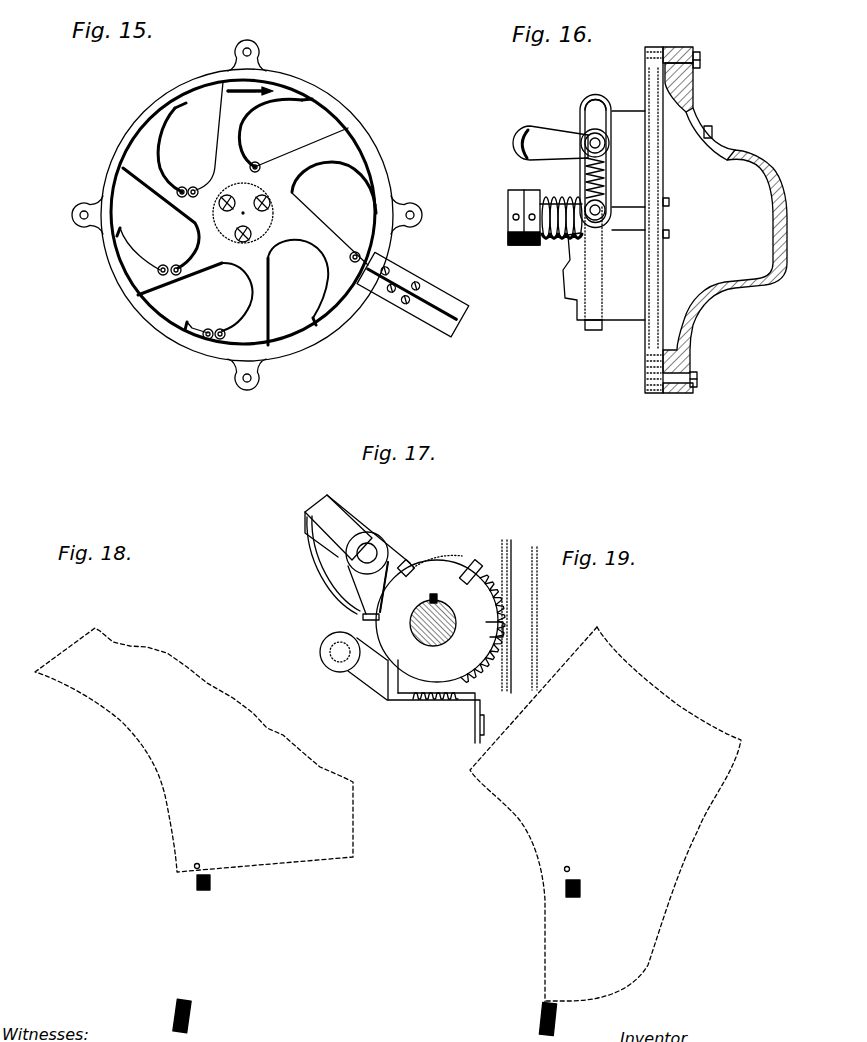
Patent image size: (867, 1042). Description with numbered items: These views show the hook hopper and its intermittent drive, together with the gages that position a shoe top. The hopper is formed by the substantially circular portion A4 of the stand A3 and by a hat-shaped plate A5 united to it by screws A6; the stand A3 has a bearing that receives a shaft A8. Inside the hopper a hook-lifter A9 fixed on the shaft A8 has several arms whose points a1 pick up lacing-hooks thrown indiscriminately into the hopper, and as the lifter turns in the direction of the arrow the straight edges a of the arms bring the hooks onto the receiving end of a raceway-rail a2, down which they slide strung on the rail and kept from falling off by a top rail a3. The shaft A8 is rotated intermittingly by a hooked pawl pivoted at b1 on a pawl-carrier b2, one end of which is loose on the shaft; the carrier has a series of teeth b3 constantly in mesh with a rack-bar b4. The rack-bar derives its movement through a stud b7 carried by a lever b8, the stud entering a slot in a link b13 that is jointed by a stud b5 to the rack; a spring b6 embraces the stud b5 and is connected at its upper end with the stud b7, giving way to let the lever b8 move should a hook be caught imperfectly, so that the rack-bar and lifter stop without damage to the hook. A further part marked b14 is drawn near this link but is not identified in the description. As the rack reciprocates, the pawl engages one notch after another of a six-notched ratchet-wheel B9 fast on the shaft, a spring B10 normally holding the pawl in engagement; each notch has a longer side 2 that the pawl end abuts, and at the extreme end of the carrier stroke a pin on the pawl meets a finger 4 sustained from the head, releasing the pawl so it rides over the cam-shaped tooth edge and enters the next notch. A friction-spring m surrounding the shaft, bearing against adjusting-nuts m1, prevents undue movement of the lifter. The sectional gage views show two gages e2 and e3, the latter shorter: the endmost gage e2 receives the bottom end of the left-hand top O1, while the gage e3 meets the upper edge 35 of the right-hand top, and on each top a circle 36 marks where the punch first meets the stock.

In FIG. 15, the hook-lifter A9 is at (128, 154).
In FIG. 15, the circular portion of stand A4 is at (161, 332).
In FIG. 16, the circular portion of stand A4 is at (643, 380).
In FIG. 15, the straight edges of lifter arms a is at (216, 133).
In FIG. 15, the points of lifter arms a1 is at (247, 217).
In FIG. 15, the raceway-rail a2 is at (432, 333).
In FIG. 15, the top rail a3 is at (445, 310).
In FIG. 16, the hat-shaped plate A5 is at (750, 158).
In FIG. 16, the screws A6 is at (701, 64).
In FIG. 16, the stand A3 is at (626, 322).
In FIG. 16, the shaft A8 is at (552, 240).
In FIG. 17, the shaft A8 is at (443, 606).
In FIG. 16, the link b13 is at (598, 113).
In FIG. 16, the lever b8 is at (545, 134).
In FIG. 16, the stud b7 is at (588, 136).
In FIG. 16, the spring b6 is at (606, 190).
In FIG. 16, the loop link b14 is at (587, 175).
In FIG. 16, the stud b5 is at (588, 232).
In FIG. 16, the rack-bar b4 is at (594, 331).
In FIG. 17, the rack-bar b4 is at (536, 556).
In FIG. 16, the friction-spring m is at (520, 200).
In FIG. 16, the adjusting-nuts m1 is at (507, 233).
In FIG. 17, the pivot of pawl b1 is at (370, 550).
In FIG. 17, the pawl-carrier b2 is at (345, 520).
In FIG. 17, the teeth of pawl-carrier b3 is at (479, 577).
In FIG. 17, the longer side of ratchet notch 2 is at (408, 562).
In FIG. 17, the spring B10 is at (326, 578).
In FIG. 17, the ratchet-wheel B9 is at (442, 690).
In FIG. 17, the finger 4 is at (388, 670).
In FIG. 18, the upper edge of top 35 is at (244, 871).
In FIG. 19, the upper edge of top 35 is at (582, 655).
In FIG. 18, the circle 36 is at (194, 866).
In FIG. 19, the circle 36 is at (564, 869).
In FIG. 18, the top or shoe-upper O1 is at (140, 770).
In FIG. 19, the top or shoe-upper O1 is at (533, 832).
In FIG. 18, the gage e2 is at (174, 1013).
In FIG. 19, the gage e2 is at (540, 1020).
In FIG. 18, the gage e3 is at (196, 885).
In FIG. 19, the gage e3 is at (565, 890).